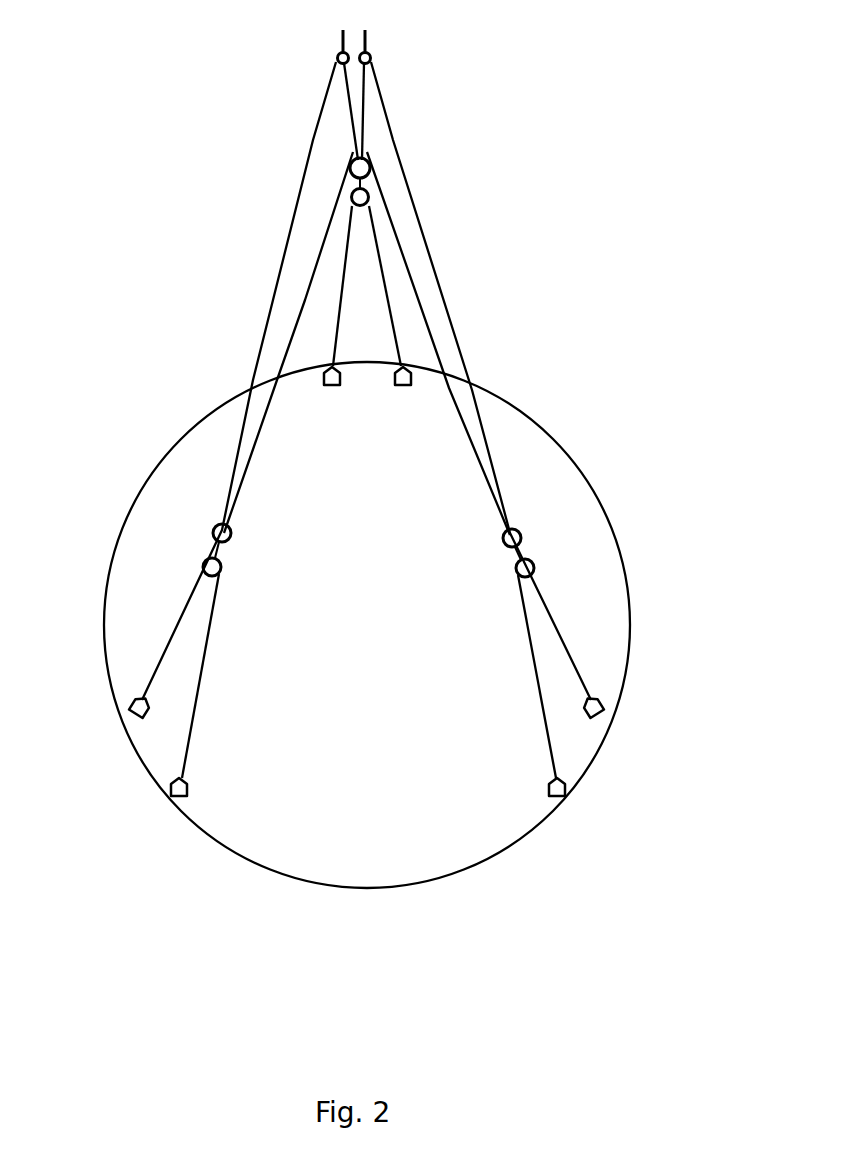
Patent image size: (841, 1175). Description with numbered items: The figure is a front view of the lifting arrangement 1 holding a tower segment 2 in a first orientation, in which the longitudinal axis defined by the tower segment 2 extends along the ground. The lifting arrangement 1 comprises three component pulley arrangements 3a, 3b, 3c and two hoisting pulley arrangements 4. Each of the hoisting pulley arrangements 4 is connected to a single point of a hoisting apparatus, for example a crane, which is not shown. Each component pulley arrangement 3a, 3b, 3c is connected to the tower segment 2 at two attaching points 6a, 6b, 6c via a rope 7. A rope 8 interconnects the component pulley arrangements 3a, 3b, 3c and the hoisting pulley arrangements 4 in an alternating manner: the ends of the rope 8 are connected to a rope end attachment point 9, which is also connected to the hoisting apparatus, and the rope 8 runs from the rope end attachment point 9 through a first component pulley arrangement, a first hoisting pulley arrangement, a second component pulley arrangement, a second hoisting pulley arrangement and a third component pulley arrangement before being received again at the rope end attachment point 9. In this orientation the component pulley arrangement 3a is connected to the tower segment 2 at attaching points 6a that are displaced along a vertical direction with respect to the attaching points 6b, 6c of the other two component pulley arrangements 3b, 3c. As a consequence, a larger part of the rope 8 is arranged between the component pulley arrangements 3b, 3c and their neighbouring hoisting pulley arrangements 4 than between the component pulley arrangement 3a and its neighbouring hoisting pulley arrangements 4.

The lifting arrangement 1 is at (555, 105).
The tower segment 2 is at (628, 667).
The component pulley arrangement 3a is at (370, 182).
The component pulley arrangement 3b is at (222, 552).
The component pulley arrangement 3c is at (510, 555).
The hoisting pulley arrangement 4 is at (337, 56).
The attaching points 6a is at (401, 388).
The attaching points 6b is at (187, 798).
The attaching points 6c is at (606, 718).
The rope 7 is at (343, 287).
The rope 8 is at (443, 283).
The rope end attachment point 9 is at (358, 135).